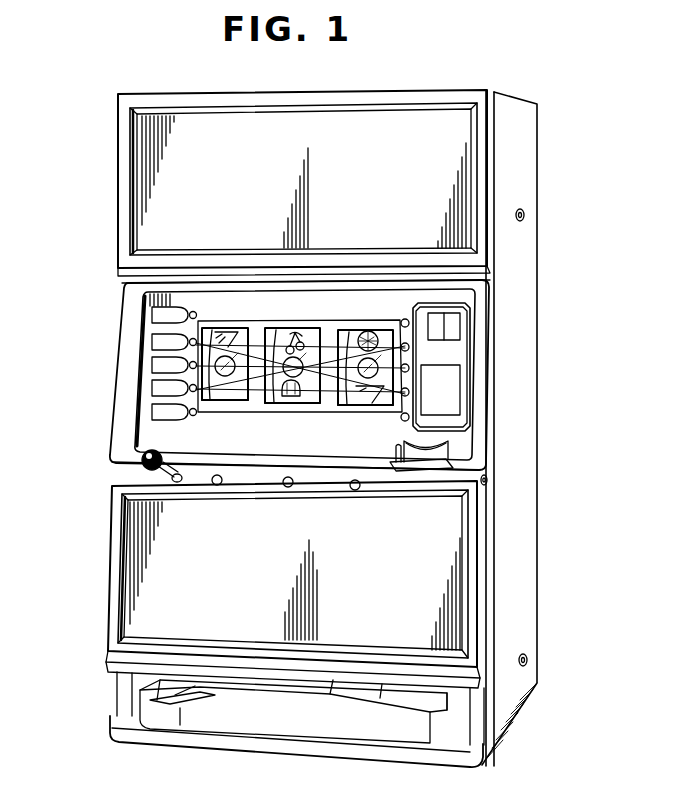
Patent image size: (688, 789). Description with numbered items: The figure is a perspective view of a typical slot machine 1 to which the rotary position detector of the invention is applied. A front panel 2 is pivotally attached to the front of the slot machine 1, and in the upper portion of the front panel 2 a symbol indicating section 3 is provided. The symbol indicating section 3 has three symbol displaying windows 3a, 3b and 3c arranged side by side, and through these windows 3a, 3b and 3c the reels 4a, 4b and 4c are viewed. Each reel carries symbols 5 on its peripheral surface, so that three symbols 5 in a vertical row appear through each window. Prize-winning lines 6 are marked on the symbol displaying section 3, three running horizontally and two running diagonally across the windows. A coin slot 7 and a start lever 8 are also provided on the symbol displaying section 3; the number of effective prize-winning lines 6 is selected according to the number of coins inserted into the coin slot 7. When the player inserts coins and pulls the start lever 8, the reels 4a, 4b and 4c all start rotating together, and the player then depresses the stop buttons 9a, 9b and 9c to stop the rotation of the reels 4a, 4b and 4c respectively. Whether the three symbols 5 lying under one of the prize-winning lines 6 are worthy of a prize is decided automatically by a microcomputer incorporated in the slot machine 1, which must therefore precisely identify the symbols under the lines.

The slot machine 1 is at (540, 378).
The front panel 2 is at (150, 555).
The symbol indicating section 3 is at (302, 313).
The symbol displaying window 3a is at (243, 326).
The symbol displaying window 3b is at (318, 330).
The symbol displaying window 3c is at (355, 330).
The reel 4a is at (241, 402).
The reel 4b is at (310, 404).
The reel 4c is at (352, 406).
The symbols 5 is at (185, 348).
The prize-winning lines 6 is at (185, 372).
The coin slot 7 is at (420, 466).
The start lever 8 is at (165, 482).
The stop button 9a is at (217, 486).
The stop button 9b is at (288, 488).
The stop button 9c is at (355, 491).